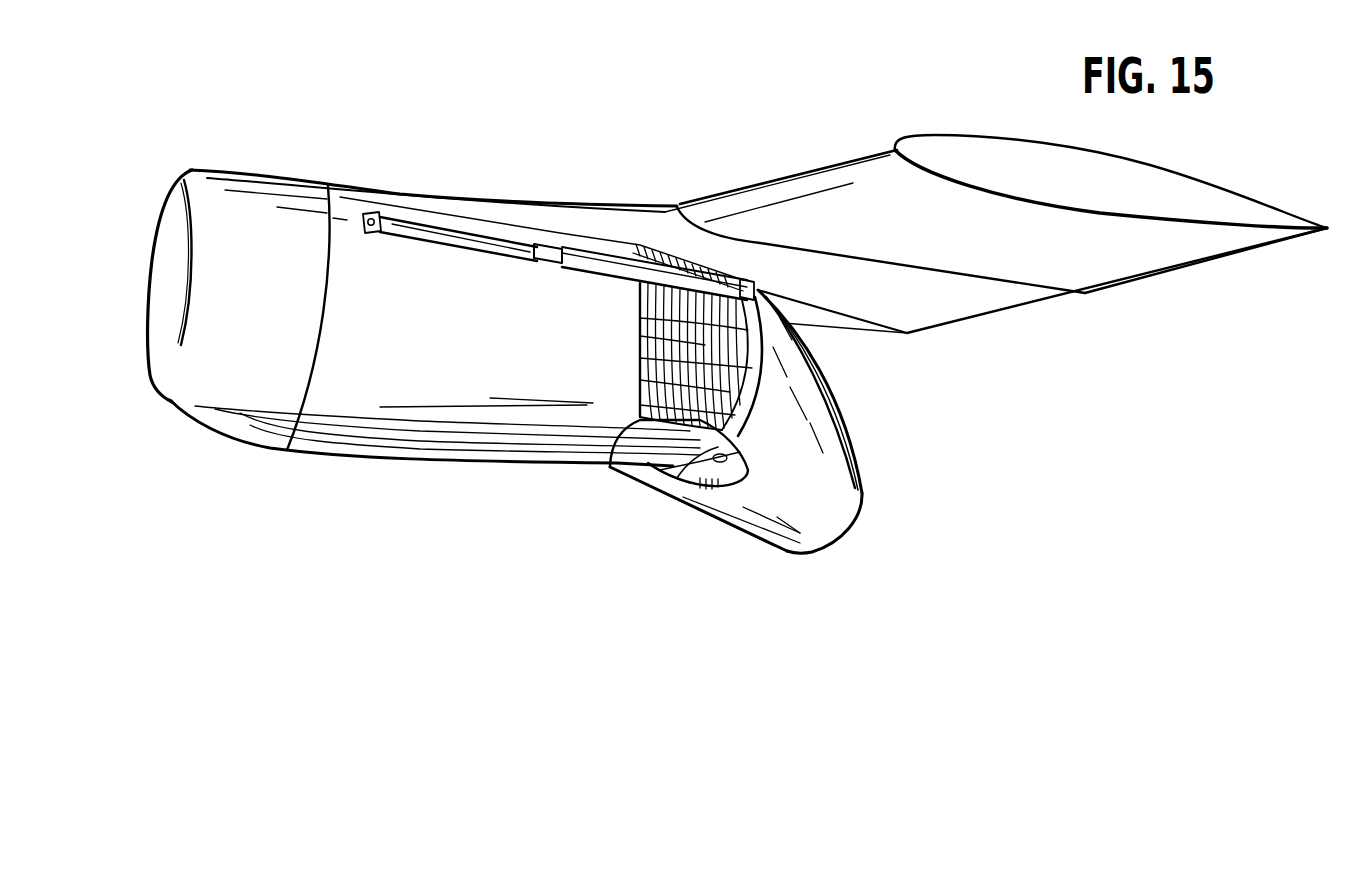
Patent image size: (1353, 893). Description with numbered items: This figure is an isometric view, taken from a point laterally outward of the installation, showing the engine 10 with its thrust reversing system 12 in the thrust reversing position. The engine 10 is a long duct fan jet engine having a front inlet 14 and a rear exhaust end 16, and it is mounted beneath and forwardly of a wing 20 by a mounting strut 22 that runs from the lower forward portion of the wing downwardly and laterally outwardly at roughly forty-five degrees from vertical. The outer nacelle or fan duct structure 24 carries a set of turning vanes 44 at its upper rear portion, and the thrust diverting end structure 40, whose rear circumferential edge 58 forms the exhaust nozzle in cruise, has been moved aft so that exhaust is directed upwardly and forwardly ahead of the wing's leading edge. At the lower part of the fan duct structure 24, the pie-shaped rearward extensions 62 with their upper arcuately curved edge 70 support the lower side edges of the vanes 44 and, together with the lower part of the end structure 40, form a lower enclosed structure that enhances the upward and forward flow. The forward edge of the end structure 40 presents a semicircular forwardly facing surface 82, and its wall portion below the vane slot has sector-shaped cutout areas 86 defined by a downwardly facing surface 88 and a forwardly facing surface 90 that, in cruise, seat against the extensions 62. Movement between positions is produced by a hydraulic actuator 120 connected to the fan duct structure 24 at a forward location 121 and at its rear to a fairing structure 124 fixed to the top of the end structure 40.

The engine 10 is at (345, 160).
The thrust reversing system 12 is at (703, 536).
The front inlet 14 is at (165, 268).
The rear exhaust end 16 is at (862, 512).
The wing 20 is at (820, 188).
The mounting strut 22 is at (643, 208).
The outer nacelle structure or fan duct structure 24 is at (355, 455).
The thrust diverting end structure 40 is at (848, 480).
The turning vanes 44 is at (700, 362).
The rear circumferential edge 58 is at (838, 537).
The rearward extensions 62 is at (627, 460).
The upper arcuately curved edge 70 is at (614, 448).
The semicircular forwardly facing surface 82 is at (740, 393).
The sector-shaped cutout areas 86 is at (682, 482).
The upper downwardly facing surface 88 is at (740, 462).
The forwardly facing surface 90 is at (660, 475).
The hydraulic actuator 120 is at (561, 250).
The forward location 121 is at (382, 215).
The fairing structure 124 is at (800, 352).